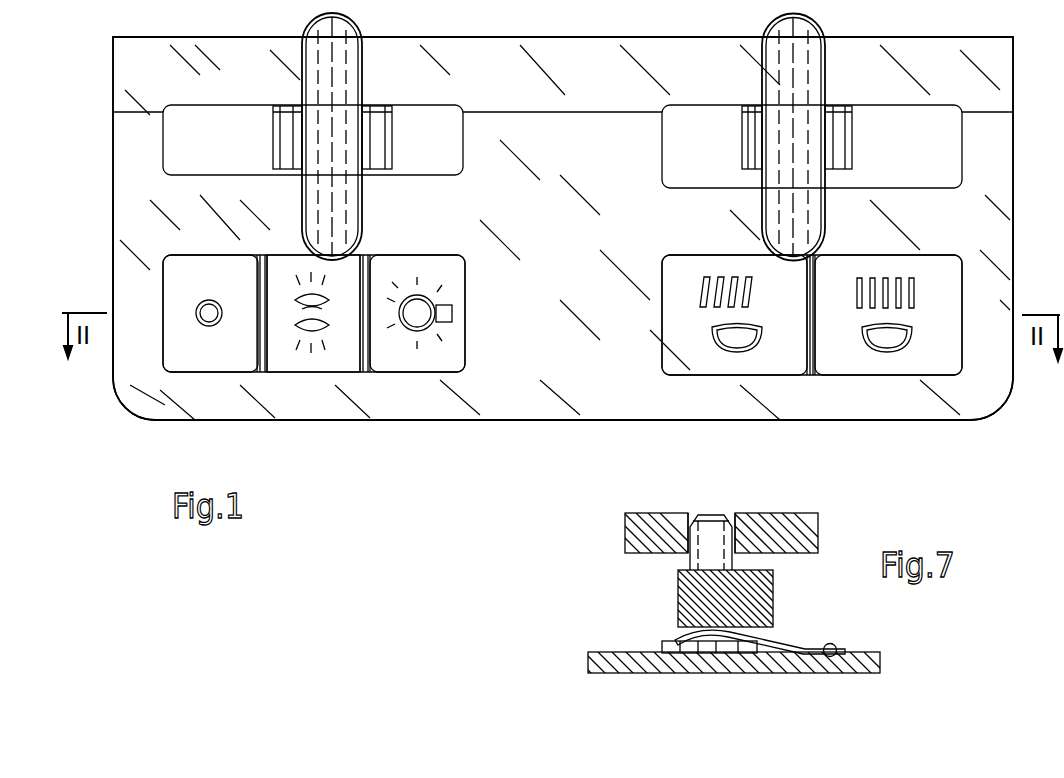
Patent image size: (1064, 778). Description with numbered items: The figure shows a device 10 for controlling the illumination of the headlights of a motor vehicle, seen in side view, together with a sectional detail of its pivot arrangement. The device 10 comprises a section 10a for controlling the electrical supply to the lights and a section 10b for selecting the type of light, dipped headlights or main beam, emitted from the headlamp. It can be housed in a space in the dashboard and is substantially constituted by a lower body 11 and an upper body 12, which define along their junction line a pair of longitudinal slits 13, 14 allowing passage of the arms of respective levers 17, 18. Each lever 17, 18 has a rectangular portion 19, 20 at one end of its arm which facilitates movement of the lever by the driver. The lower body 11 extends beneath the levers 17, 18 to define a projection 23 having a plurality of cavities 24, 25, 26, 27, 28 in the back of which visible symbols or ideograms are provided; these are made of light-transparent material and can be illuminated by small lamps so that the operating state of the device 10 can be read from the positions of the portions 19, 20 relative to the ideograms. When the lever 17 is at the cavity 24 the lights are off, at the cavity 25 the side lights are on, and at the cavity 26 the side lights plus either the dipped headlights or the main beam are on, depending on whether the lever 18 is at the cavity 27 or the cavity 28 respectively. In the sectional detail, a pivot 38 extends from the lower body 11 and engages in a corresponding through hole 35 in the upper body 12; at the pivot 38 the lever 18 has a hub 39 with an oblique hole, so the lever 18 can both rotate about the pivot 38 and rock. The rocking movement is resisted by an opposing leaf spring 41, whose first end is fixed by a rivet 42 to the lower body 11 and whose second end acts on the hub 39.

In FIG. 1, the device 10 is at (448, 456).
In FIG. 1, the section for controlling the electrical supply to the lights 10a is at (341, 425).
In FIG. 1, the section for the selection of the type of light 10b is at (949, 427).
In FIG. 1, the lower body 11 is at (519, 422).
In FIG. 7, the lower body 11 is at (870, 662).
In FIG. 1, the upper body 12 is at (557, 40).
In FIG. 7, the upper body 12 is at (640, 538).
In FIG. 1, the longitudinal slit 13 is at (286, 106).
In FIG. 1, the longitudinal slit 14 is at (748, 106).
In FIG. 1, the lever 17 is at (388, 134).
In FIG. 1, the lever 18 is at (831, 134).
In FIG. 1, the rectangular portion 19 is at (336, 85).
In FIG. 1, the rectangular portion 20 is at (805, 95).
In FIG. 1, the projection 23 is at (142, 398).
In FIG. 1, the cavity 24 is at (228, 372).
In FIG. 1, the cavity 25 is at (305, 372).
In FIG. 1, the cavity 26 is at (403, 372).
In FIG. 1, the cavity 27 is at (720, 372).
In FIG. 1, the cavity 28 is at (895, 372).
In FIG. 7, the through hole 35 is at (695, 512).
In FIG. 7, the pivot 38 is at (706, 553).
In FIG. 7, the hub 39 is at (700, 596).
In FIG. 7, the leaf spring 41 is at (772, 645).
In FIG. 7, the rivet 42 is at (836, 647).